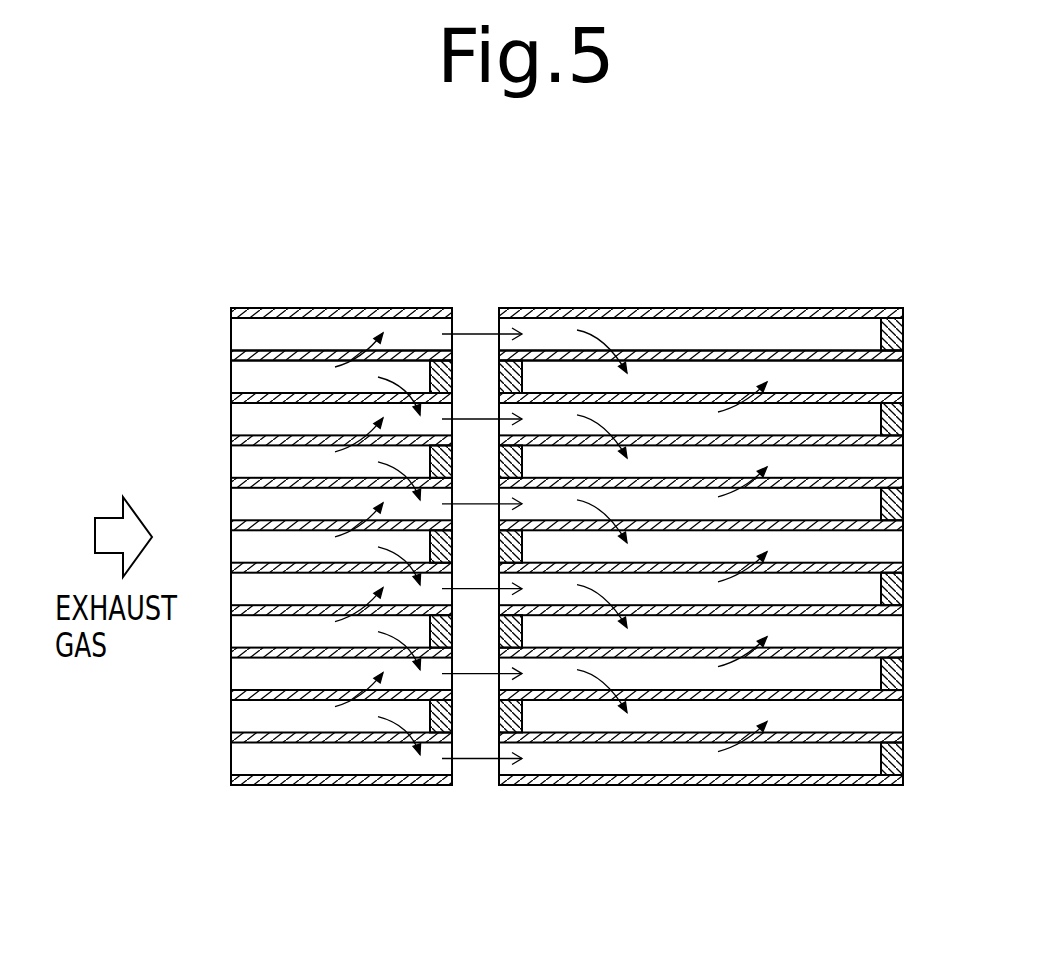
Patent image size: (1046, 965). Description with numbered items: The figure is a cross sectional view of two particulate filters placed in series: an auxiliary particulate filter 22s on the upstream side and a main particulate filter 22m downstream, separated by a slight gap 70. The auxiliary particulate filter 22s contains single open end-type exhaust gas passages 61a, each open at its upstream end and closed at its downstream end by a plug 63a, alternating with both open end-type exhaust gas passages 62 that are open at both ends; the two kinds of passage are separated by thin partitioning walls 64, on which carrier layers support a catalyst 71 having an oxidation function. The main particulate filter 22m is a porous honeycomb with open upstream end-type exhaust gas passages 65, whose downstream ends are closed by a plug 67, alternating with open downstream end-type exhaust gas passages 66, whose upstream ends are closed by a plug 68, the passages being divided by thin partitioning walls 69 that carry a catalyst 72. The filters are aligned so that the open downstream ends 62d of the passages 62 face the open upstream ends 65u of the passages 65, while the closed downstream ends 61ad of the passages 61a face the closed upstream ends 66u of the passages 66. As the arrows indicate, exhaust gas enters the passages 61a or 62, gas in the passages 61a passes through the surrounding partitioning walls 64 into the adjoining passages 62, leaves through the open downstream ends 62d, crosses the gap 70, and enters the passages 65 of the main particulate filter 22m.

The auxiliary particulate filter 22s is at (366, 232).
The main particulate filter 22m is at (676, 235).
The single open end-type exhaust gas passage 61a is at (278, 373).
The closed downstream end of single open end-type exhaust gas passage 61ad is at (413, 365).
The both open end-type exhaust gas passage 62 is at (287, 677).
The open downstream end of both open end-type exhaust gas passage 62d is at (427, 765).
The plug 63a is at (455, 370).
The partitioning wall 64 is at (330, 705).
The open upstream end-type exhaust gas passage 65 is at (807, 418).
The open upstream end of open upstream end-type exhaust gas passage 65u is at (527, 767).
The open downstream end-type exhaust gas passage 66 is at (858, 720).
The closed upstream end of open downstream end-type exhaust gas passage 66u is at (548, 372).
The plug 67 is at (903, 415).
The plug 68 is at (520, 713).
The partitioning wall 69 is at (778, 703).
The gap 70 is at (476, 798).
The catalyst 71 is at (322, 340).
The catalyst 72 is at (712, 342).